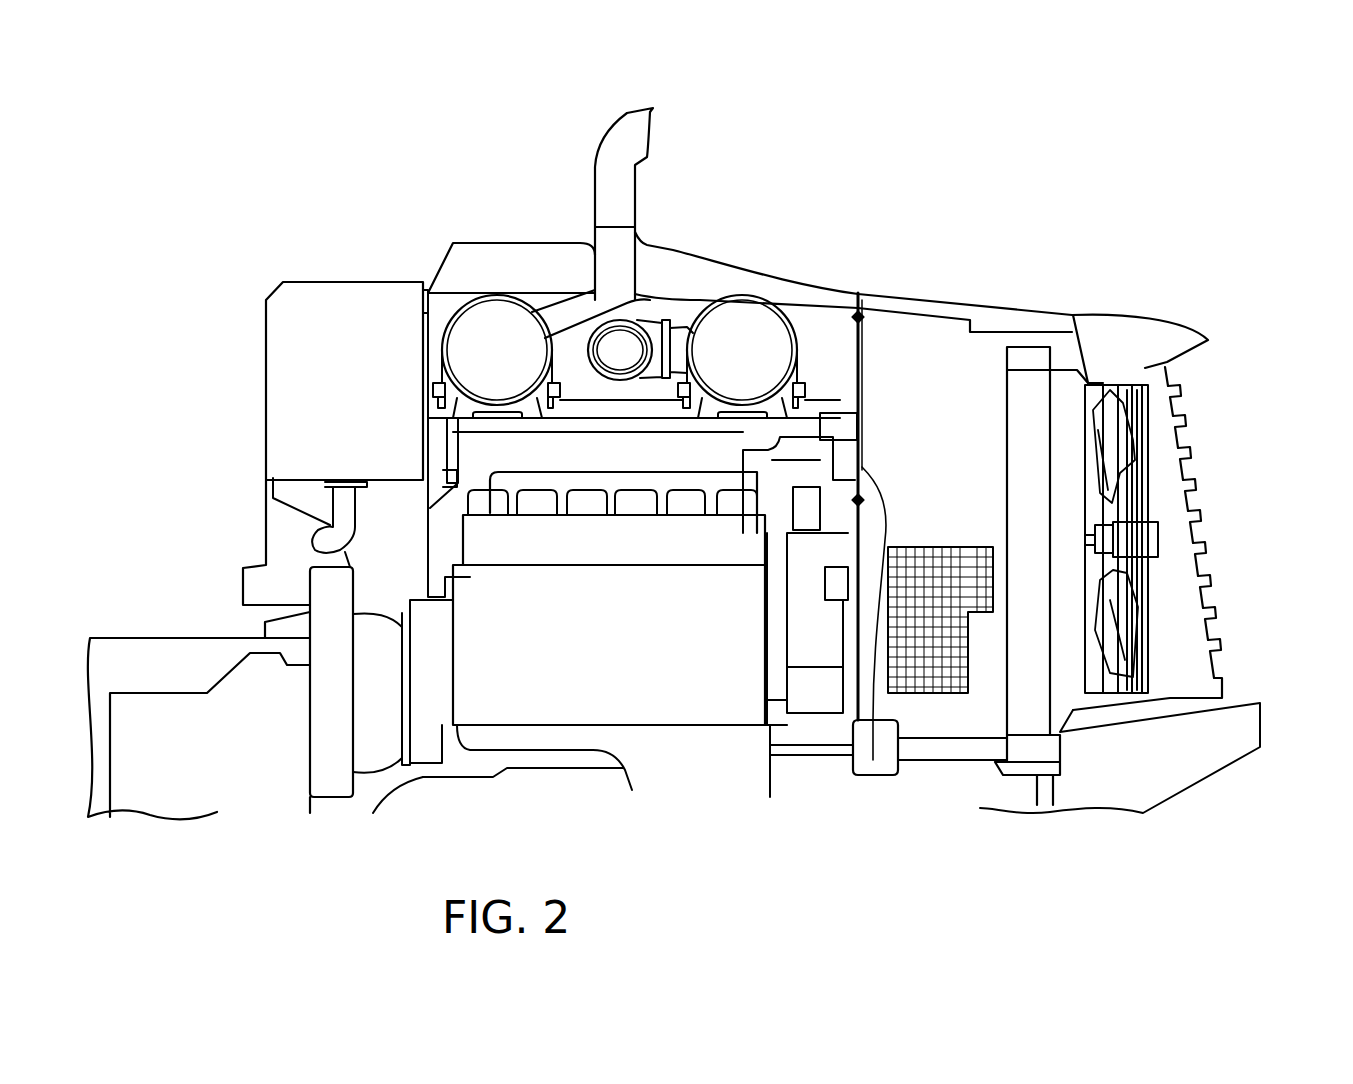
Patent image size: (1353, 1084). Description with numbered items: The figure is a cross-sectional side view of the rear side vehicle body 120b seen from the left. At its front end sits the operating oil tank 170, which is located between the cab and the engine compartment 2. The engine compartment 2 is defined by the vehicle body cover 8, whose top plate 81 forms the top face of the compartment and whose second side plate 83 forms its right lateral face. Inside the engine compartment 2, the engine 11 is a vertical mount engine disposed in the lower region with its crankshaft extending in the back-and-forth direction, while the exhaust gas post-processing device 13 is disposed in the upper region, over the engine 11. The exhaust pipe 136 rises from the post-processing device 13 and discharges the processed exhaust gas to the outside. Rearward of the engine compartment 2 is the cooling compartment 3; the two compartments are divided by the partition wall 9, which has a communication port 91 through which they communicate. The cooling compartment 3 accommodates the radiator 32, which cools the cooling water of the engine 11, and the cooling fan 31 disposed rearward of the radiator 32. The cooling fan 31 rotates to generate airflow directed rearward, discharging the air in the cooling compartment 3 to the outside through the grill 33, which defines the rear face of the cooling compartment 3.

The engine compartment 2 is at (658, 282).
The cooling compartment 3 is at (945, 366).
The vehicle body cover 8 is at (879, 290).
The partition wall 9 is at (873, 760).
The engine 11 is at (677, 700).
The exhaust gas post-processing device 13 is at (495, 282).
The cooling fan 31 is at (1130, 458).
The radiator 32 is at (1027, 367).
The grill 33 is at (1207, 508).
The top plate 81 is at (698, 253).
The second side plate 83 is at (963, 717).
The communication port 91 is at (863, 350).
The rear side vehicle body 120b is at (545, 209).
The exhaust pipe 136 is at (639, 109).
The operating oil tank 170 is at (317, 300).